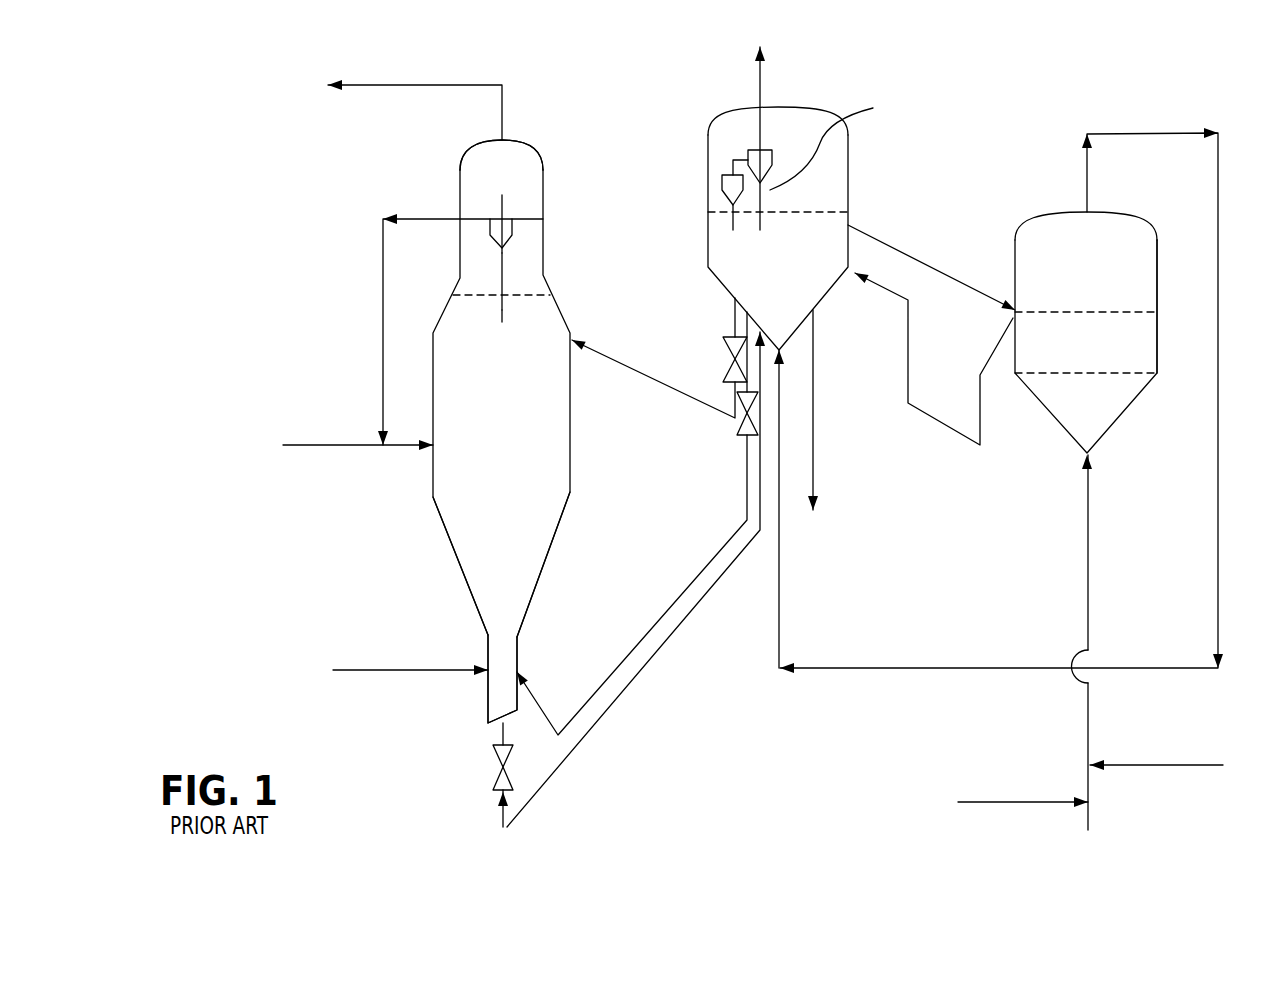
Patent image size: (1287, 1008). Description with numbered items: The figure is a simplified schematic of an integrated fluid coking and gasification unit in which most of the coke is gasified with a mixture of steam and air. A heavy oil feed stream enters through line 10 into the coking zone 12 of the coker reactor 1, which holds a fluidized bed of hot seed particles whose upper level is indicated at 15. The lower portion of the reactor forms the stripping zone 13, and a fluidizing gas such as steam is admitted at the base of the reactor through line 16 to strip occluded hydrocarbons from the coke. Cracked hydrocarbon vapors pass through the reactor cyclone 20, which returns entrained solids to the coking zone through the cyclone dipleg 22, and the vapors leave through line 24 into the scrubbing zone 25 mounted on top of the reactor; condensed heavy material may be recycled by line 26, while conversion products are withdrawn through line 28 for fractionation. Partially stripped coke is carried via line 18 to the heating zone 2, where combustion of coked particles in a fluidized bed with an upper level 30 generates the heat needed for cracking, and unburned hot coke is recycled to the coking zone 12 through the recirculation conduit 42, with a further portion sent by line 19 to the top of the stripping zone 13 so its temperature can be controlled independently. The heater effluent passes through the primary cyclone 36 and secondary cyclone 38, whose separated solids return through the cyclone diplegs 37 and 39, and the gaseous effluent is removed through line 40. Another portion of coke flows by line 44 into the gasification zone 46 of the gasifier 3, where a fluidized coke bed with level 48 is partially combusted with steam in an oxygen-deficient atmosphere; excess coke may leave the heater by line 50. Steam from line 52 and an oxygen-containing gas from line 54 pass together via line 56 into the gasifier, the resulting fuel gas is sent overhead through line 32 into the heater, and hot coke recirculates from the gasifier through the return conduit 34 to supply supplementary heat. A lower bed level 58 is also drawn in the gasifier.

The coker reactor 1 is at (511, 401).
The heating zone 2 is at (786, 283).
The gasifier 3 is at (1096, 369).
The line 10 is at (320, 447).
The coking zone 12 is at (447, 527).
The stripping zone 13 is at (507, 655).
The upper level 15 is at (523, 292).
The line 16 is at (410, 670).
The line 18 is at (610, 712).
The line 19 is at (656, 600).
The reactor cyclone 20 is at (512, 226).
The cyclone dipleg 22 is at (502, 253).
The line 24 is at (502, 210).
The scrubbing zone 25 is at (458, 166).
The line 26 is at (381, 302).
The line 28 is at (370, 85).
The upper level 30 is at (820, 210).
The line 32 is at (1087, 180).
The return conduit 34 is at (945, 428).
The primary cyclone 36 is at (722, 185).
The cyclone dipleg 37 is at (733, 221).
The secondary cyclone 38 is at (772, 150).
The cyclone dipleg 39 is at (837, 145).
The line 40 is at (755, 90).
The recirculation conduit 42 is at (660, 384).
The line 44 is at (895, 252).
The gasification zone 46 is at (1132, 277).
The level 48 is at (1128, 312).
The line 50 is at (813, 415).
The line 52 is at (1037, 802).
The line 54 is at (1140, 766).
The line 56 is at (1088, 537).
The vessel 3 lower bed level 58 is at (1117, 378).